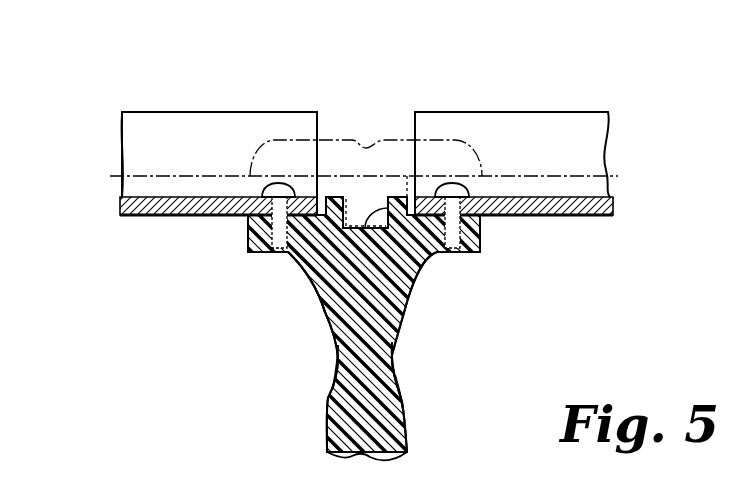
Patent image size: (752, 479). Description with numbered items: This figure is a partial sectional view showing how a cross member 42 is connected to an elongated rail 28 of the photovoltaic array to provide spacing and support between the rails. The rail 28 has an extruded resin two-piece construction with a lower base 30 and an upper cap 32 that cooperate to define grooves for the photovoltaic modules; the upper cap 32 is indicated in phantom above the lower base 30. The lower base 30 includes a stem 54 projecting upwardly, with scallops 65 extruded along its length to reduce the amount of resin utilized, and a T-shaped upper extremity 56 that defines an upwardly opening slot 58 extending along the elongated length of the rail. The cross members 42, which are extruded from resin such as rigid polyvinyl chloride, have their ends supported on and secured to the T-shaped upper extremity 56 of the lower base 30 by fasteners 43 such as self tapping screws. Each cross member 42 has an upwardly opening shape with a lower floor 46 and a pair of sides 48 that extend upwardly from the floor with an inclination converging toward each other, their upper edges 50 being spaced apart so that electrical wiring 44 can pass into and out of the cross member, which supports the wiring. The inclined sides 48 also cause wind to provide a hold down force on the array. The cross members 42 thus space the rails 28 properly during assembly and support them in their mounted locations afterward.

The elongated rail 28 is at (462, 334).
The lower base 30 is at (310, 391).
The upper cap 32 is at (440, 128).
The cross member 42 is at (235, 100).
The fastener 43 is at (282, 183).
The electrical wiring 44 is at (409, 156).
The lower floor 46 is at (170, 217).
The side 48 is at (170, 137).
The upper edge 50 is at (157, 112).
The stem 54 is at (403, 393).
The upper extremity 56 is at (302, 280).
The upwardly opening slot 58 is at (430, 245).
The scallop 65 is at (338, 358).